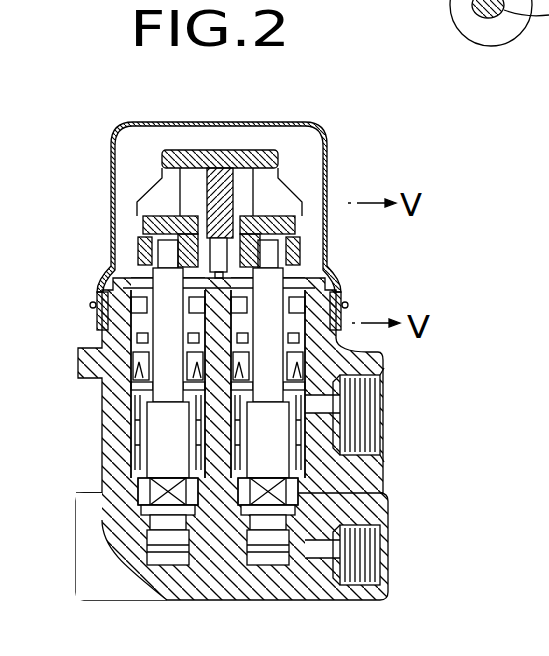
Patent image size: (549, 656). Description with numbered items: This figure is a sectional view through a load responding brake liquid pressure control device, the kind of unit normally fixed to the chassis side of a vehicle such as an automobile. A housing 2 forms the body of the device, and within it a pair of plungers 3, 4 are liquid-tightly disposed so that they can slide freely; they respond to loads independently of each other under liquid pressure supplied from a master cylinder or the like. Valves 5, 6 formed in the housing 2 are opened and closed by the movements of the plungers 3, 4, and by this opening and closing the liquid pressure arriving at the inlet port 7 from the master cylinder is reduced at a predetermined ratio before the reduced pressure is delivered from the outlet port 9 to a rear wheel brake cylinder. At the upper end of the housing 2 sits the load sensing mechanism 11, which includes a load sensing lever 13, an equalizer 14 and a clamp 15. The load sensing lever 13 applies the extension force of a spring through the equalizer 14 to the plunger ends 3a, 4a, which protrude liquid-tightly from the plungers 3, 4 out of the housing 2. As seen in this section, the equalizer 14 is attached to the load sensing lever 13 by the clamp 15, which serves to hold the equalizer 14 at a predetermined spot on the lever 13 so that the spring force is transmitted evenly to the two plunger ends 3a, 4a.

The housing 2 is at (350, 465).
The plunger 3 is at (270, 345).
The plunger end 3a is at (298, 252).
The plunger 4 is at (165, 327).
The plunger end 4a is at (140, 250).
The valve 5 is at (290, 505).
The valve 6 is at (148, 505).
The inlet port 7 is at (362, 433).
The outlet port 9 is at (365, 563).
The load sensing mechanism 11 is at (298, 190).
The load sensing lever 13 is at (249, 183).
The equalizer 14 is at (143, 217).
The clamp 15 is at (172, 195).